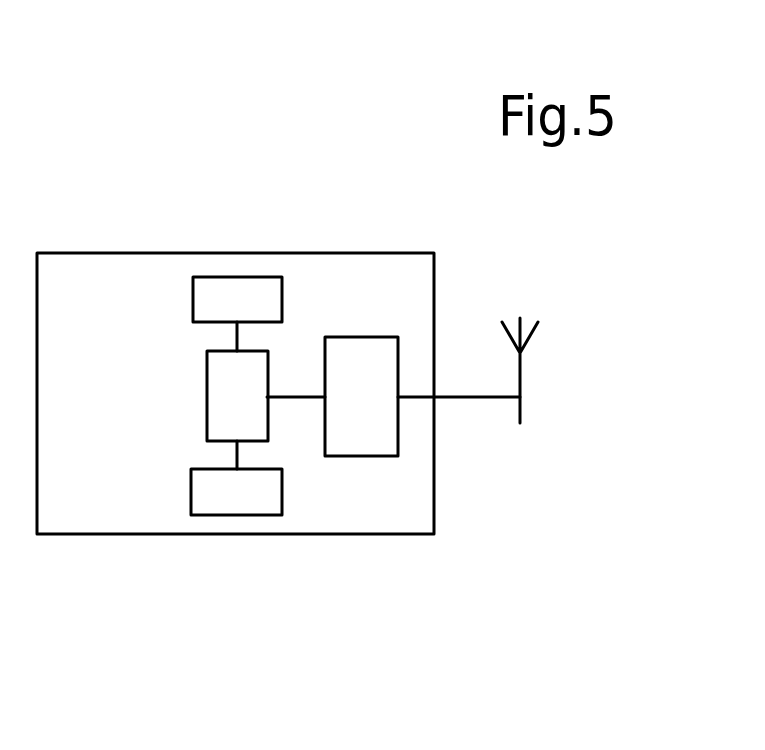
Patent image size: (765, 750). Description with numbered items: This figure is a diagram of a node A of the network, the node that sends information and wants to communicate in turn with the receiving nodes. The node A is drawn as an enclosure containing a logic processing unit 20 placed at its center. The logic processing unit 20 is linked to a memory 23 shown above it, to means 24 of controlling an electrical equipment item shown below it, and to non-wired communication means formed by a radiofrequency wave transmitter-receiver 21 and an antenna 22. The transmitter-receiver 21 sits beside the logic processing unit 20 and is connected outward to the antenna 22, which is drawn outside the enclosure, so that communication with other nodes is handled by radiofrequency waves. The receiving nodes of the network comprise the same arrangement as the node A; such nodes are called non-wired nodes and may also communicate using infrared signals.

The node A is at (257, 218).
The logic processing unit 20 is at (233, 390).
The radiofrequency wave transmitter-receiver 21 is at (363, 371).
The antenna 22 is at (520, 420).
The memory 23 is at (222, 288).
The means of controlling an electrical equipment item 24 is at (247, 497).